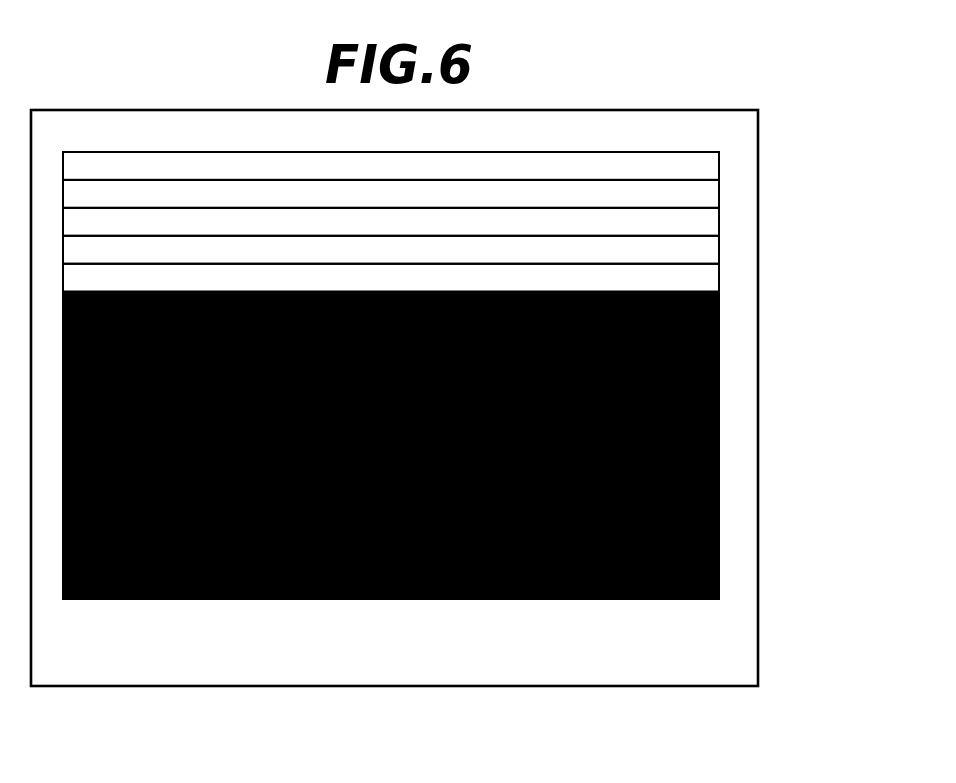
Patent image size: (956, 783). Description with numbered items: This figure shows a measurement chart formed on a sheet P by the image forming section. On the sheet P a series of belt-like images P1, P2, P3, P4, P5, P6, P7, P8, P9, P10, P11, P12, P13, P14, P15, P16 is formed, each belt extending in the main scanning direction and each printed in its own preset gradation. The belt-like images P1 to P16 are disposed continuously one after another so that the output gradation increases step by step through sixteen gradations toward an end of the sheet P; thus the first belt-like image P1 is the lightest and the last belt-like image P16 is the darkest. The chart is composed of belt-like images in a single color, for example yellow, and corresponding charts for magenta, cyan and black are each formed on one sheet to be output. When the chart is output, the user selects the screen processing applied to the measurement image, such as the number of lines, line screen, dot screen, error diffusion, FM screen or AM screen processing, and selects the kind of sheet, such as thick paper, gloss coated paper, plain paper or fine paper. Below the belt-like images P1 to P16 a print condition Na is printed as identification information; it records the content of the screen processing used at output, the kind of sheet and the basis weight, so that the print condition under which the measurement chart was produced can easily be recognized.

The sheet P is at (758, 135).
The print condition Na is at (375, 658).
The belt-like image P1 is at (719, 166).
The belt-like image P2 is at (719, 194).
The belt-like image P3 is at (719, 222).
The belt-like image P4 is at (719, 250).
The belt-like image P5 is at (719, 278).
The belt-like image P6 is at (719, 306).
The belt-like image P7 is at (719, 334).
The belt-like image P8 is at (719, 362).
The belt-like image P9 is at (719, 390).
The belt-like image P10 is at (719, 417).
The belt-like image P11 is at (719, 445).
The belt-like image P12 is at (719, 473).
The belt-like image P13 is at (719, 501).
The belt-like image P14 is at (719, 529).
The belt-like image P15 is at (719, 557).
The belt-like image P16 is at (719, 585).